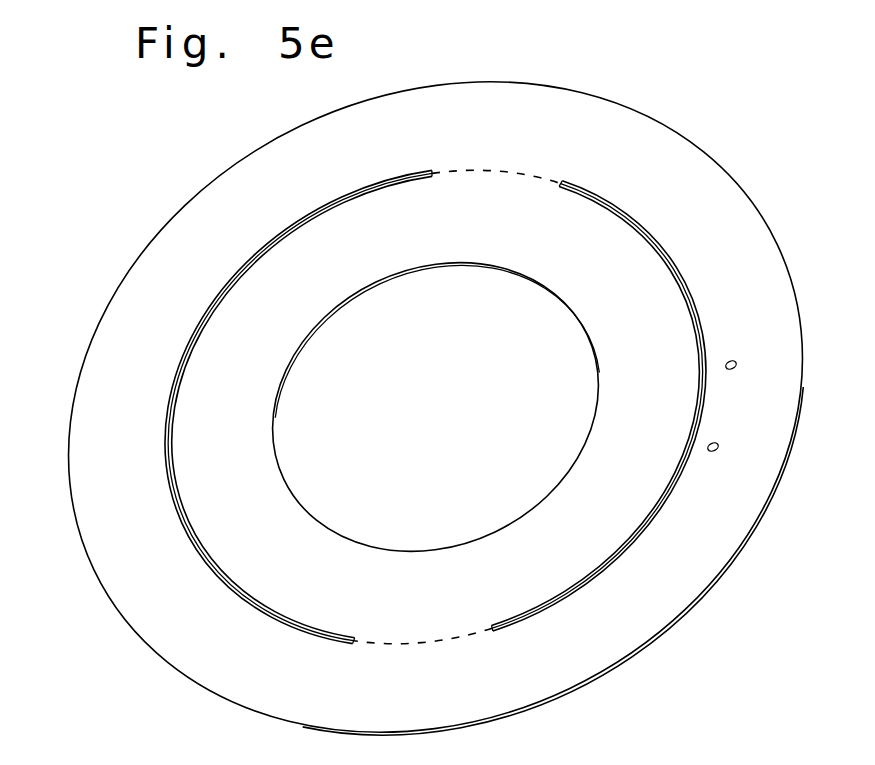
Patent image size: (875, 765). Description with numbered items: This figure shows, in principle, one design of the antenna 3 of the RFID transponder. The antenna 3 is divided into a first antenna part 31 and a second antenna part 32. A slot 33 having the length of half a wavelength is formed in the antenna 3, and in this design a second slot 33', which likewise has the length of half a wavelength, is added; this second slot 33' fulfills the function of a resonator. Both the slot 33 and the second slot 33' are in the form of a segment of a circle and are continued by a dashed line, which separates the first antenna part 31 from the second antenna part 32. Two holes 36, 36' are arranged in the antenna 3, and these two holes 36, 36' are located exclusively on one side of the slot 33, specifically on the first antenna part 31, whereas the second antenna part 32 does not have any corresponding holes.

The antenna 3 is at (712, 618).
The first antenna part 31 is at (758, 265).
The second antenna part 32 is at (617, 412).
The slot 33 is at (652, 386).
The second slot 33' is at (284, 388).
The hole 36 is at (798, 341).
The hole 36' is at (788, 464).